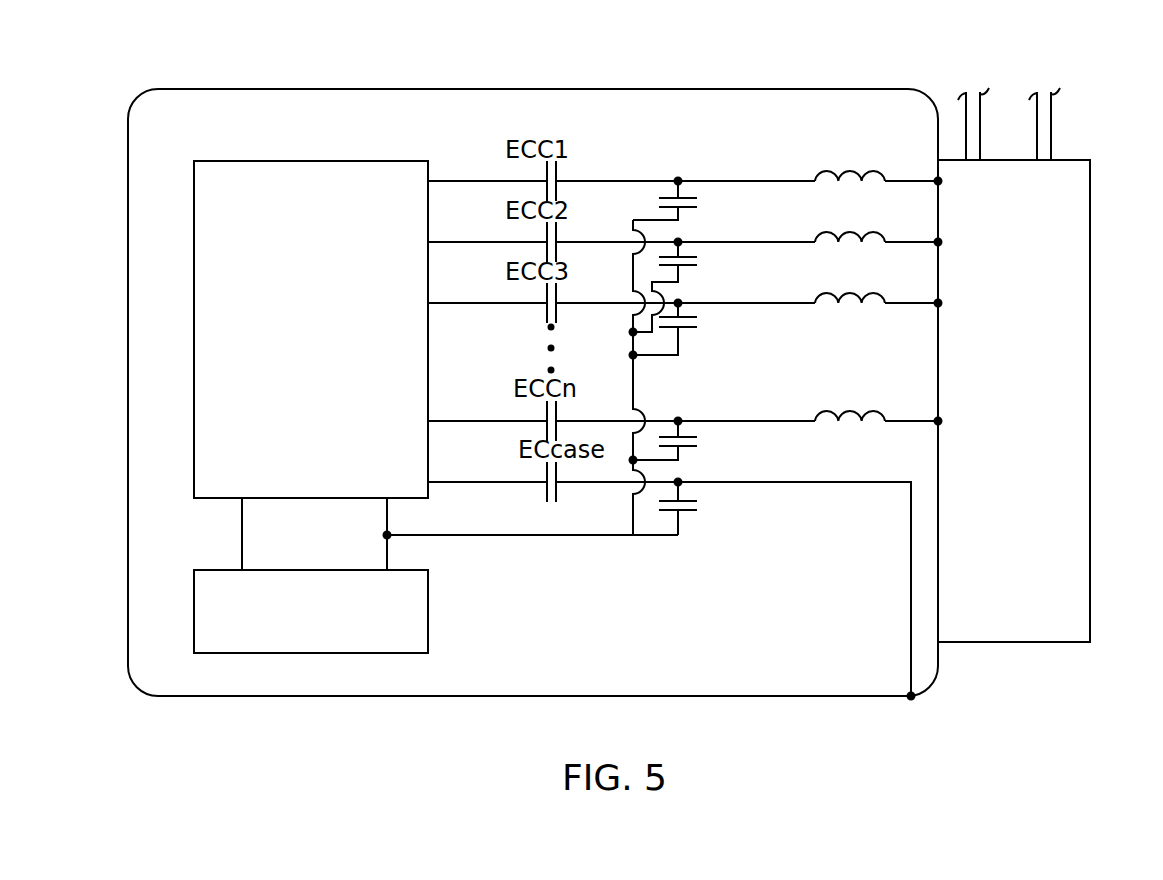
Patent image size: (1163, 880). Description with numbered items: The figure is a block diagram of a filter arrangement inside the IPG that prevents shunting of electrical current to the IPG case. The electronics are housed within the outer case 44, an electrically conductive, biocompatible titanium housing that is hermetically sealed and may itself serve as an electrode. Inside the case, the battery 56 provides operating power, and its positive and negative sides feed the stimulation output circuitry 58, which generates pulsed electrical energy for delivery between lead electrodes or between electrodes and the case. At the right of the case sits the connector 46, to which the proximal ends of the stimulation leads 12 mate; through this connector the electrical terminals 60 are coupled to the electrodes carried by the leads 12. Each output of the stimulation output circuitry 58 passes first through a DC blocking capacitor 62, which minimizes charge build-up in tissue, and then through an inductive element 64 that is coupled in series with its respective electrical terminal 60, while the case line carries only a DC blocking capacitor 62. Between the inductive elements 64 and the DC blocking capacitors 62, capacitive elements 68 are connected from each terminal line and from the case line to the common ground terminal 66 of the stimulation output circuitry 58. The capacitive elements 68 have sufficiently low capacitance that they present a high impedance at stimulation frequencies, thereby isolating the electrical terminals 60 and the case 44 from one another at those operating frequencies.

The stimulation lead 12 is at (966, 112).
The outer case 44 is at (728, 89).
The stimulation output circuitry 58 is at (312, 161).
The DC blocking capacitor 62 is at (557, 181).
The capacitive element 68 is at (683, 210).
The electrical terminal 60 is at (938, 181).
The inductive element 64 is at (850, 189).
The common terminal 66 is at (386, 535).
The battery 56 is at (430, 612).
The connector 46 is at (1090, 400).